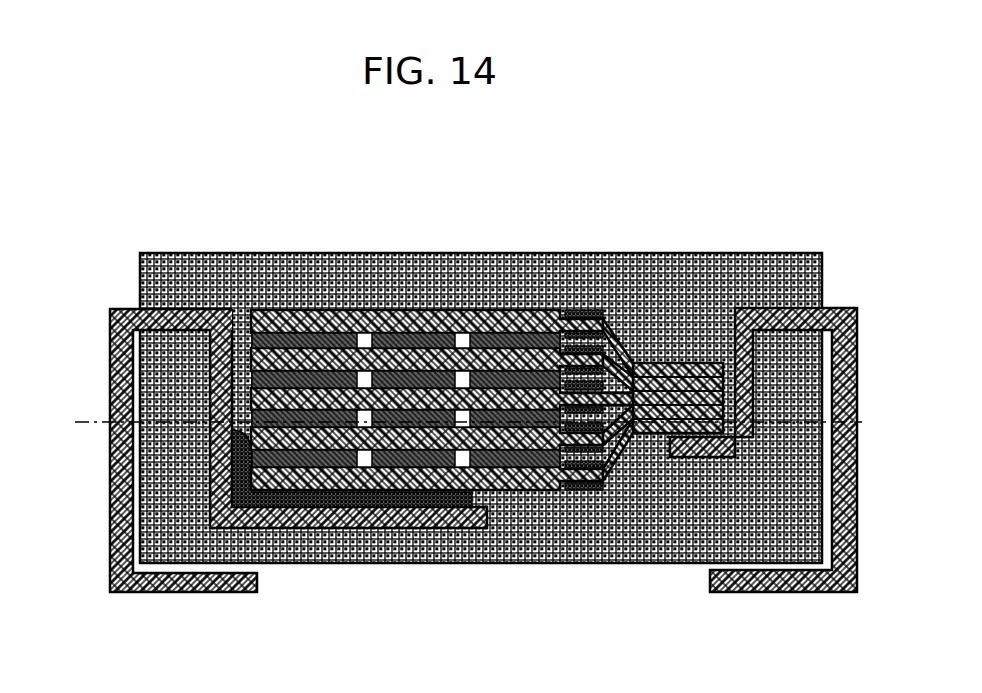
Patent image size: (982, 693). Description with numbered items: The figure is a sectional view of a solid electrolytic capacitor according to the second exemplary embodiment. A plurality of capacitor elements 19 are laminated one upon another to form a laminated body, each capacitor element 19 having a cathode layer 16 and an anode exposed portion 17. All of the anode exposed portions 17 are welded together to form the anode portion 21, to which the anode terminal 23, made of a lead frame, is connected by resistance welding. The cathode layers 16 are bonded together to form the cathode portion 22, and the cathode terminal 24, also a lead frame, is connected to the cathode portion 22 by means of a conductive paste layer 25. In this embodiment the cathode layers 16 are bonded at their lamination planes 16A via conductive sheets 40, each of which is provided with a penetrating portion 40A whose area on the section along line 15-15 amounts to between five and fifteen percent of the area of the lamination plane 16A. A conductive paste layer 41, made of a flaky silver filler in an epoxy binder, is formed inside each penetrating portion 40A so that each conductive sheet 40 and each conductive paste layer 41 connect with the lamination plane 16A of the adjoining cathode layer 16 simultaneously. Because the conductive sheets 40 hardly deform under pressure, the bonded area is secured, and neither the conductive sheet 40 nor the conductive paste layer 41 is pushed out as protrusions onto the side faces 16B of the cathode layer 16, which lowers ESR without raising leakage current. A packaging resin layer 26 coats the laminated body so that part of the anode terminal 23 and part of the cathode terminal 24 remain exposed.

The packaging resin layer 26 is at (155, 290).
The conductive paste layer 25 is at (228, 497).
The cathode terminal 24 is at (118, 497).
The anode terminal 23 is at (843, 322).
The lamination plane 16A is at (302, 468).
The cathode portion 22 is at (300, 310).
The side faces 16B is at (250, 360).
The anode exposed portion 17 is at (683, 363).
The cathode layer 16 is at (457, 478).
The conductive sheet 40 is at (540, 470).
The conductive paste layer 41 is at (422, 333).
The penetrating portion 40A is at (368, 333).
The anode portion 21 is at (700, 363).
The capacitor element 19 is at (620, 323).
The line 15- 15 is at (473, 423).